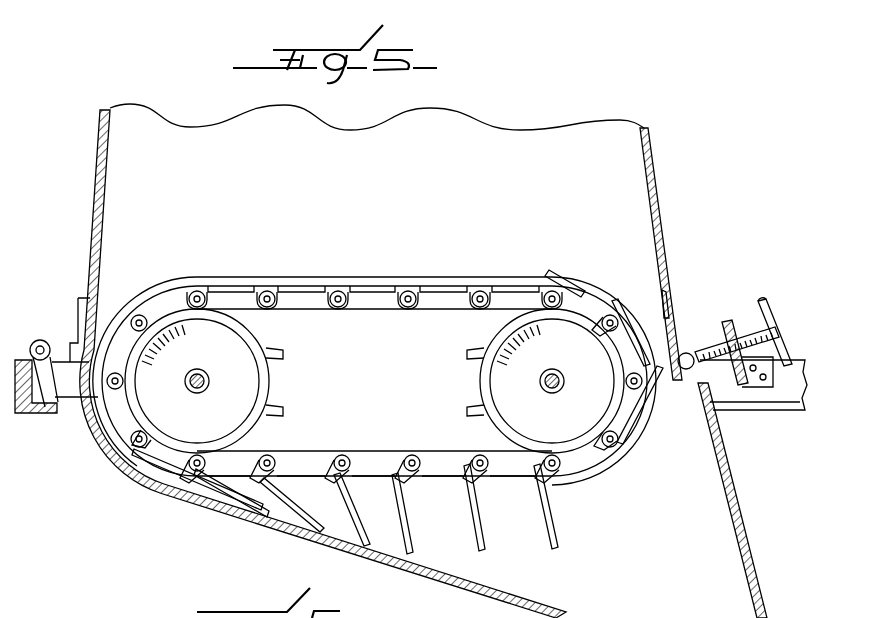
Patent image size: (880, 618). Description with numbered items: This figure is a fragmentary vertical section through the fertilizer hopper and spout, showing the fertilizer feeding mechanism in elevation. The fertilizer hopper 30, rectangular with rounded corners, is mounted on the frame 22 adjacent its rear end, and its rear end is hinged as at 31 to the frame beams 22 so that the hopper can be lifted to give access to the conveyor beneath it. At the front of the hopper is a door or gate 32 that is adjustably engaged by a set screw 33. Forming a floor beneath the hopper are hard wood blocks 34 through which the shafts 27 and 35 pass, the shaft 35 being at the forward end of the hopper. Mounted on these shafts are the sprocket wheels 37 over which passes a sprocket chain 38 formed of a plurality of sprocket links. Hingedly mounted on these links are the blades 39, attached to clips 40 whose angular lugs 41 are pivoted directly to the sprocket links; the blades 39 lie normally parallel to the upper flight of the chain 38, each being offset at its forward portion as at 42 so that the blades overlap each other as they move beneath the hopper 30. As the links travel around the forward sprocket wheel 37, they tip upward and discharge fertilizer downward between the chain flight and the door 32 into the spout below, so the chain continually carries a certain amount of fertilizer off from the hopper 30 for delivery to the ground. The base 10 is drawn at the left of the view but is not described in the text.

The base frame 10 is at (28, 418).
The frame 22 is at (67, 407).
The shaft 27 is at (195, 393).
The fertilizer hopper 30 is at (108, 164).
The hinge 31 is at (42, 340).
The door or gate 32 is at (673, 322).
The set screw 33 is at (758, 312).
The hard wood blocks 34 is at (372, 332).
The shaft 35 is at (551, 393).
The sprocket wheels 37 is at (243, 382).
The sprocket chain 38 is at (286, 286).
The blades 39 is at (441, 283).
The clips 40 is at (286, 470).
The angular lugs 41 is at (340, 308).
The offset 42 is at (477, 284).